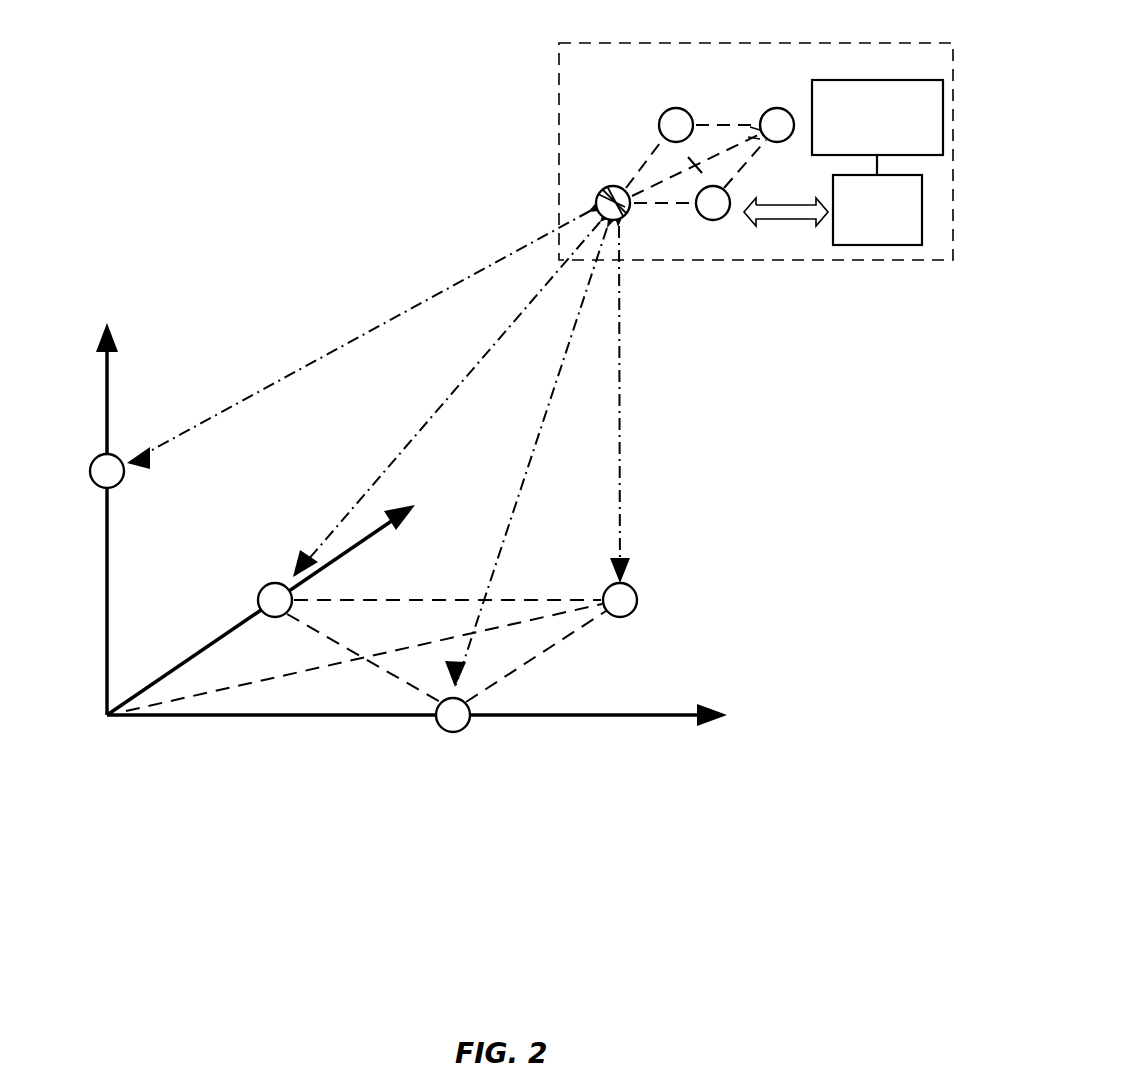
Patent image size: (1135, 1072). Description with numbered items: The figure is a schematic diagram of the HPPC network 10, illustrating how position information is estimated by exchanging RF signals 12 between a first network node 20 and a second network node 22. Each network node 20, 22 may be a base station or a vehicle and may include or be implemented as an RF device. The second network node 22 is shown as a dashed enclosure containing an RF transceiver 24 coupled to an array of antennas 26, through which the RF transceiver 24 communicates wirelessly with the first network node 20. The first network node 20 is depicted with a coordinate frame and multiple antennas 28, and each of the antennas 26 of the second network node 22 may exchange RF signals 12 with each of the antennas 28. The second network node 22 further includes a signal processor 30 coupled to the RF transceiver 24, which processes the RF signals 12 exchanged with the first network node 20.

The HPPC network 10 is at (297, 163).
The RF signals 12 is at (272, 385).
The first network node 20 is at (348, 750).
The second network node 22 is at (578, 43).
The RF transceiver 24 is at (833, 194).
The antennas 26 is at (676, 108).
The antennas 28 is at (90, 468).
The signal processor 30 is at (878, 80).